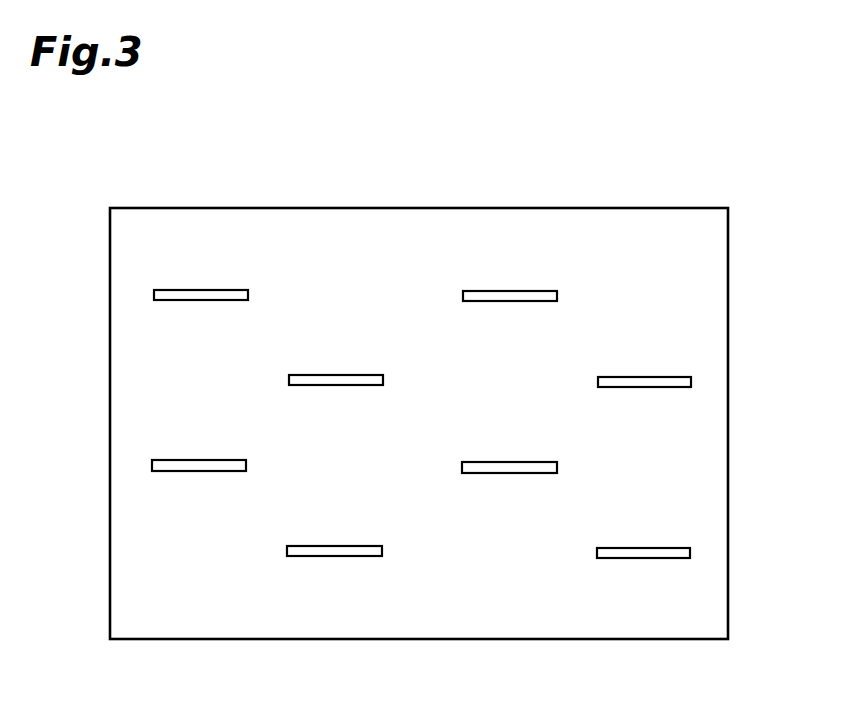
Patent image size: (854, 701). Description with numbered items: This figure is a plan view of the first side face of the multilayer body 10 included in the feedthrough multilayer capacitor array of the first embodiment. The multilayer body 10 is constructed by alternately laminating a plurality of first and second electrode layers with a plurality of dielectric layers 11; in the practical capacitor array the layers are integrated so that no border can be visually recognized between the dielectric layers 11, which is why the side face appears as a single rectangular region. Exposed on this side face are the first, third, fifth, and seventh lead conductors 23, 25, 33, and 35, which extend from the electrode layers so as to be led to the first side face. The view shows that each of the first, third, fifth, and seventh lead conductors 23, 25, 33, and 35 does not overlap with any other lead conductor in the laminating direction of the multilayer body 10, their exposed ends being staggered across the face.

The multilayer body 10 is at (651, 208).
The dielectric layers 11 is at (570, 343).
The first lead conductor 23 is at (220, 290).
The third lead conductor 25 is at (512, 291).
The fifth lead conductor 33 is at (323, 375).
The seventh lead conductor 35 is at (665, 377).